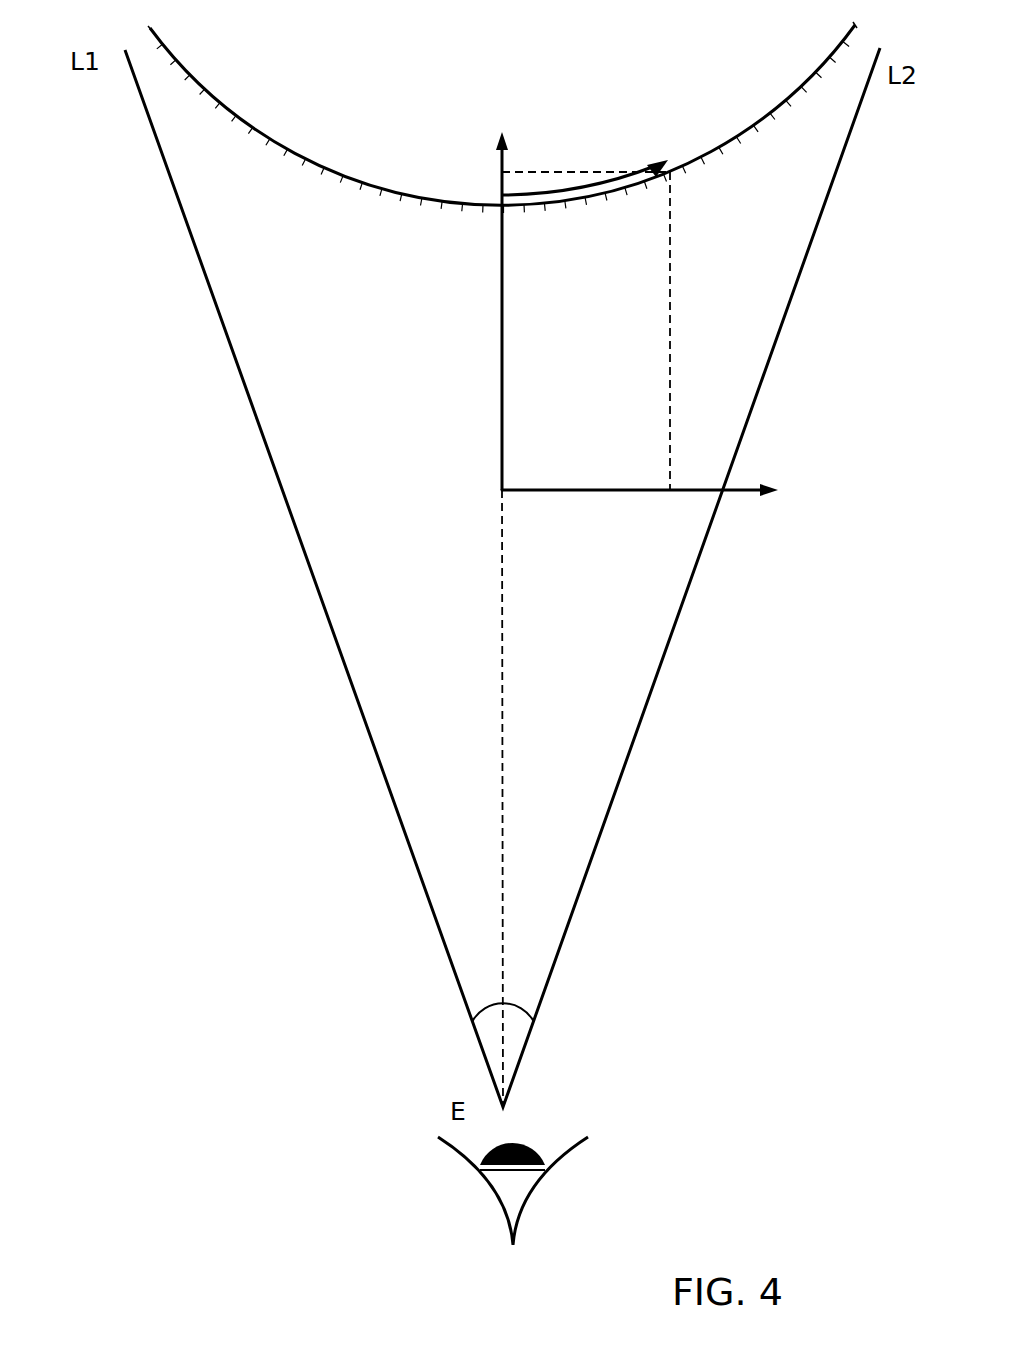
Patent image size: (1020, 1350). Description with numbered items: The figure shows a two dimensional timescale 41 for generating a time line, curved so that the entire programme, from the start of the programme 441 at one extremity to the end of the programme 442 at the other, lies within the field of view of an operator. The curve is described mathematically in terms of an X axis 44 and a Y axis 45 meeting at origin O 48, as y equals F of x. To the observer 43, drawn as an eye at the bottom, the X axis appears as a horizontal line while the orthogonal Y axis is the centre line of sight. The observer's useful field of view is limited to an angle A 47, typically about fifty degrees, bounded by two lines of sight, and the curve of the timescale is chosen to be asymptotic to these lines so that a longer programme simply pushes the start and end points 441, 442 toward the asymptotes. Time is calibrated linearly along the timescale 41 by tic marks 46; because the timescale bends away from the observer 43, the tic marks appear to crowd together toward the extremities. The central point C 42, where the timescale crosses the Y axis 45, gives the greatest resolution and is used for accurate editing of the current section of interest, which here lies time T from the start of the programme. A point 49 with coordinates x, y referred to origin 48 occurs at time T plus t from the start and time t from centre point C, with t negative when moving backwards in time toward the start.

The timescale 41 is at (356, 180).
The central point C 42 is at (497, 213).
The observer 43 is at (527, 1140).
The X axis 44 is at (733, 492).
The Y axis 45 is at (501, 163).
The tic marks 46 is at (405, 200).
The angle A 47 is at (515, 1003).
The origin O 48 is at (502, 488).
The point 49 is at (677, 180).
The start of the programme 441 is at (151, 29).
The end of the programme 442 is at (853, 26).